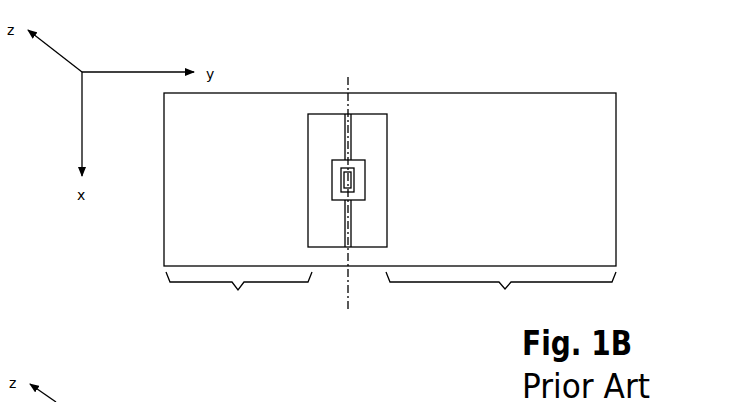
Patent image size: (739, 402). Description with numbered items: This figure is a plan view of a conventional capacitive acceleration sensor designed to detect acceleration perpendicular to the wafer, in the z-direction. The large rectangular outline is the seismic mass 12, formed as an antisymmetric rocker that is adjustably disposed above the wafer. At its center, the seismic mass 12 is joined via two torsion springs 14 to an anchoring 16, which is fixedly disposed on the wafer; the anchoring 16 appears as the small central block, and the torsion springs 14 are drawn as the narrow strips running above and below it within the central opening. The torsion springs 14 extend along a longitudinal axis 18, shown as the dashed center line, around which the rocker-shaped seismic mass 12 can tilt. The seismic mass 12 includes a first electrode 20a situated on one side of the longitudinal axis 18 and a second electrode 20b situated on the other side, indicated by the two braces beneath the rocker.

The seismic mass 12 is at (605, 178).
The torsion springs 14 is at (351, 130).
The anchoring 16 is at (338, 162).
The longitudinal axis 18 is at (349, 300).
The first electrode 20a is at (239, 294).
The second electrode 20b is at (501, 294).